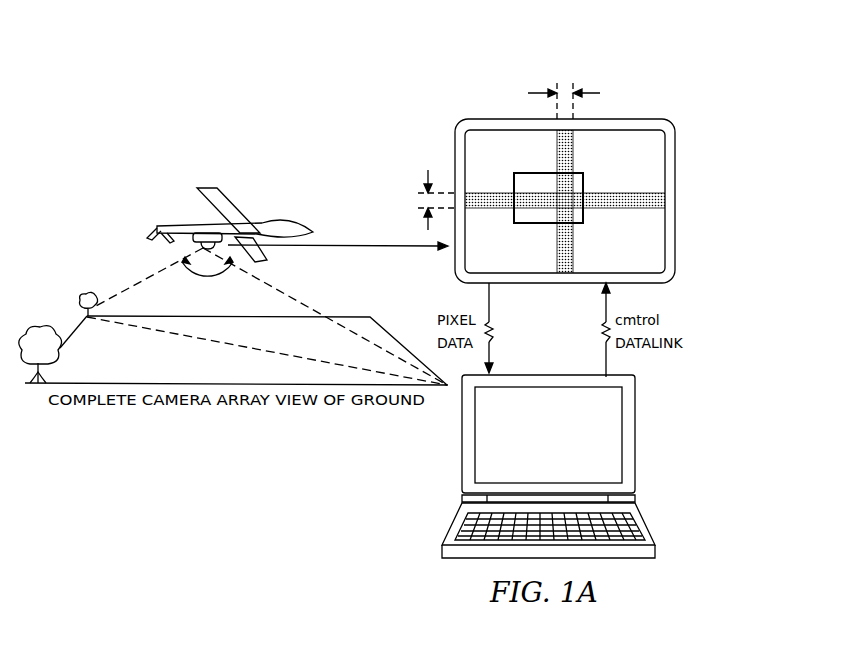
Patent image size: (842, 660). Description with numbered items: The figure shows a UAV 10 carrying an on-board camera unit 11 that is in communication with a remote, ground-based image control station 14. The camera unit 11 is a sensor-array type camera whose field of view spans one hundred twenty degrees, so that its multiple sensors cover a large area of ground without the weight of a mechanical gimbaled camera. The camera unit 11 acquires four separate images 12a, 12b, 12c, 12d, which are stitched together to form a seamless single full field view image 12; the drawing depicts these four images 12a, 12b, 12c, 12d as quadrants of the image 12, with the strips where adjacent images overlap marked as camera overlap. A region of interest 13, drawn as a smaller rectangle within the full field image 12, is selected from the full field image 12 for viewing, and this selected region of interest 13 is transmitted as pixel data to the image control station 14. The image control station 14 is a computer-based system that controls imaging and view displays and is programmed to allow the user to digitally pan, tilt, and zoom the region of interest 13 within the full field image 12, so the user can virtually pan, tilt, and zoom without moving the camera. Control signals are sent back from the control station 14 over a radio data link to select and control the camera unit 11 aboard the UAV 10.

The UAV 10 is at (180, 225).
The camera unit 11 is at (192, 243).
The full field view image 12 is at (510, 180).
The image 12a is at (634, 176).
The image 12b is at (634, 255).
The image 12c is at (509, 265).
The image 12d is at (510, 166).
The region of interest 13 is at (540, 223).
The image control station 14 is at (635, 435).